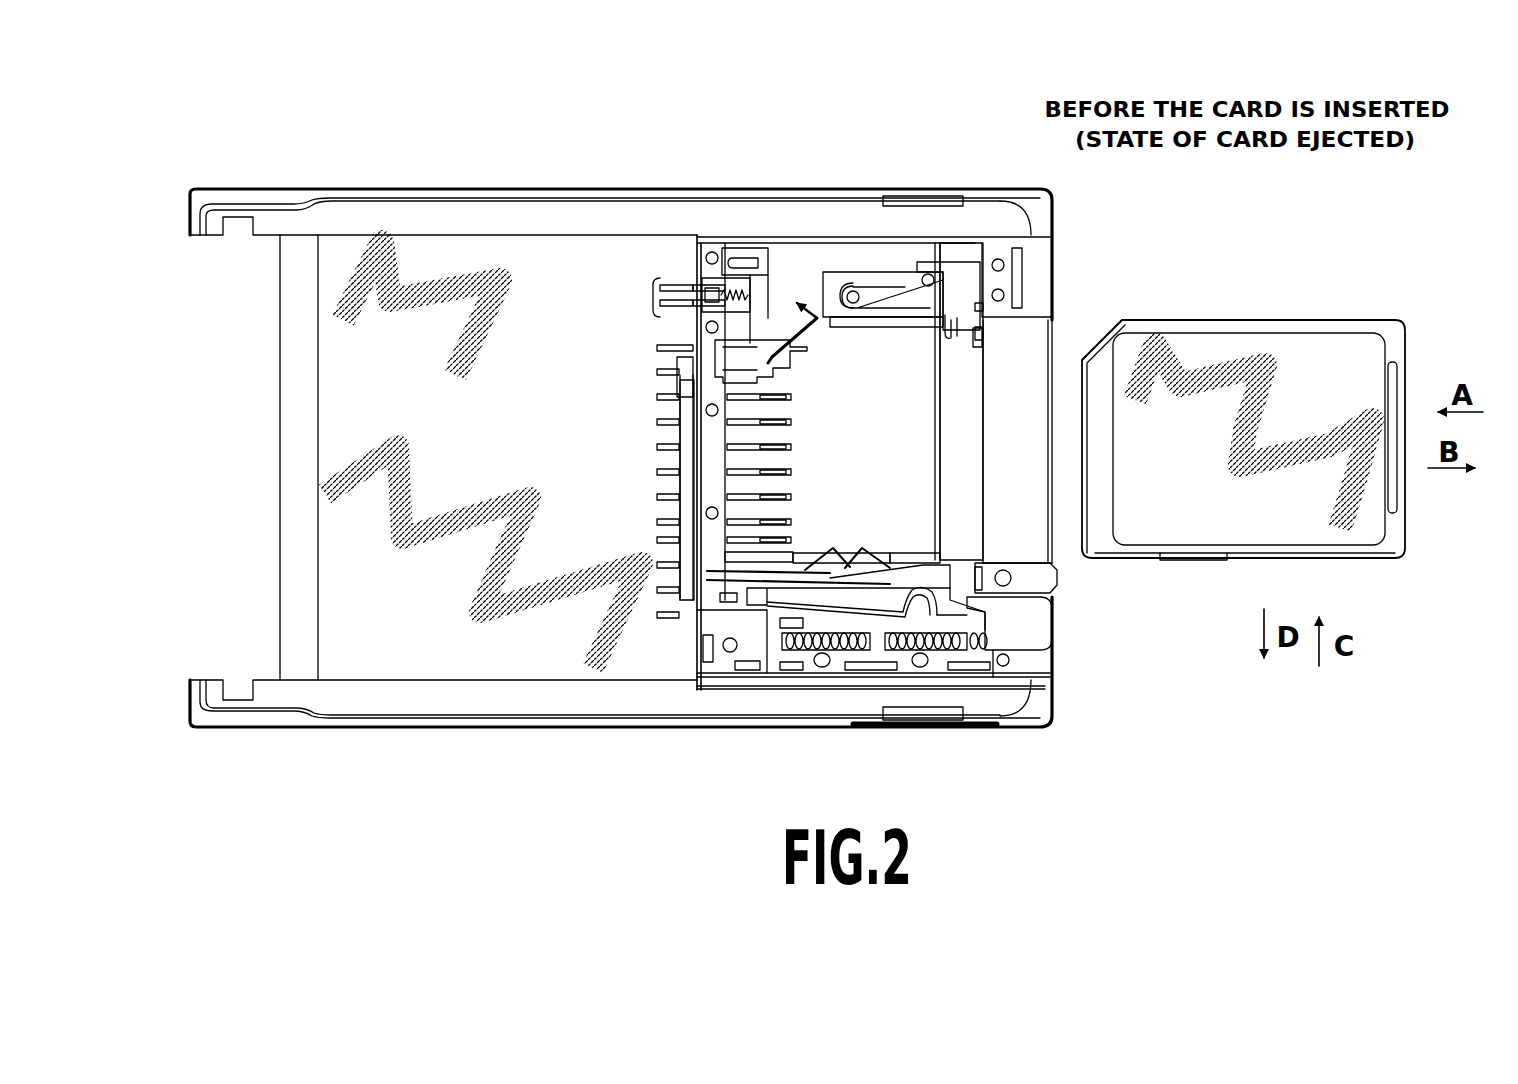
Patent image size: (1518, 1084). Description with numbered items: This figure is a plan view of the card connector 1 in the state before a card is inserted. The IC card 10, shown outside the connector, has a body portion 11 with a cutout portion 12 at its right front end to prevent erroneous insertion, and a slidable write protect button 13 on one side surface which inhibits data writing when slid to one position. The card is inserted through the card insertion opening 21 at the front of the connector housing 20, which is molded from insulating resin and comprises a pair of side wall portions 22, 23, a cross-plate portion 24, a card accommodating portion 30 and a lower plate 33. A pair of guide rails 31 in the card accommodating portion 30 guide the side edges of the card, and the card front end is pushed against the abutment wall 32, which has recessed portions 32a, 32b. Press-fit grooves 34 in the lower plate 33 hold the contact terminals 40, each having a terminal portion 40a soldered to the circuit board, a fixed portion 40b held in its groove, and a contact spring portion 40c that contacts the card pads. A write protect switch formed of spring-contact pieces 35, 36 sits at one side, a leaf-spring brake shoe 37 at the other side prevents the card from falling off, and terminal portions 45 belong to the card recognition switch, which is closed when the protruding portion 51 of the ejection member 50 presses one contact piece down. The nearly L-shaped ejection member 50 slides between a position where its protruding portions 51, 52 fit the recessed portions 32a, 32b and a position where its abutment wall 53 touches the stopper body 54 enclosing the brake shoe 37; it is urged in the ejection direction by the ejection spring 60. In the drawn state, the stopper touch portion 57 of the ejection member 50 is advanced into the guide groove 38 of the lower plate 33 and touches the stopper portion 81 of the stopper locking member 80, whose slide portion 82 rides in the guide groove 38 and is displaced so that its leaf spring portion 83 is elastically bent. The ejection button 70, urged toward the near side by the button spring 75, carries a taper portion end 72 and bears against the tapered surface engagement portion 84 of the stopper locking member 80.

The card connector 1 is at (866, 148).
The IC card 10 is at (1357, 292).
The body portion 11 is at (1395, 333).
The cutout portion 12 is at (1102, 322).
The write protect button 13 is at (1205, 560).
The connector housing 20 is at (484, 224).
The card insertion opening 21 is at (1040, 545).
The side wall portion 22 is at (565, 190).
The side wall portion 23 is at (484, 732).
The cross-plate portion 24 is at (285, 380).
The card accommodating portion 30 is at (1062, 333).
The guide rails 31 is at (890, 328).
The abutment wall 32 is at (700, 463).
The recessed portion 32a is at (698, 275).
The recessed portion 32b is at (700, 352).
The lower plate 33 is at (932, 410).
The press-fit grooves 34 is at (745, 400).
The spring-contact piece 35 is at (830, 562).
The spring-contact piece 36 is at (858, 568).
The brake shoe 37 is at (896, 270).
The guide groove 38 is at (985, 488).
The contact terminals 40 is at (762, 455).
The terminal portion 40a is at (673, 398).
The fixed portion 40b is at (678, 395).
The contact spring portion 40c is at (757, 422).
The terminal portions 45 is at (655, 300).
The ejection member 50 is at (810, 322).
The protruding portion 51 is at (775, 265).
The protruding portion 52 is at (722, 330).
The abutment wall 53 is at (810, 268).
The stopper body 54 is at (848, 272).
The stopper touch portion 57 is at (970, 262).
The ejection spring 60 is at (745, 258).
The ejection button 70 is at (1038, 668).
The taper portion end 72 is at (972, 605).
The button spring 75 is at (928, 618).
The stopper locking member 80 is at (1026, 362).
The stopper portion 81 is at (945, 262).
The slide portion 82 is at (973, 392).
The leaf spring portion 83 is at (870, 618).
The tapered surface engagement portion 84 is at (985, 622).